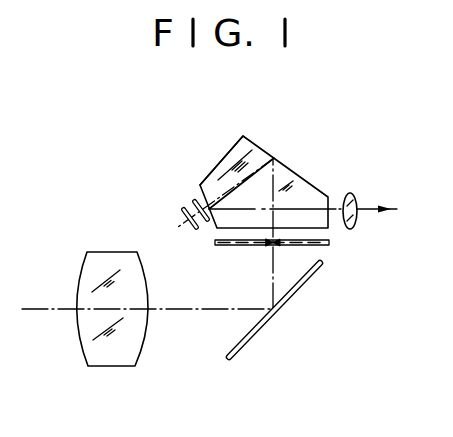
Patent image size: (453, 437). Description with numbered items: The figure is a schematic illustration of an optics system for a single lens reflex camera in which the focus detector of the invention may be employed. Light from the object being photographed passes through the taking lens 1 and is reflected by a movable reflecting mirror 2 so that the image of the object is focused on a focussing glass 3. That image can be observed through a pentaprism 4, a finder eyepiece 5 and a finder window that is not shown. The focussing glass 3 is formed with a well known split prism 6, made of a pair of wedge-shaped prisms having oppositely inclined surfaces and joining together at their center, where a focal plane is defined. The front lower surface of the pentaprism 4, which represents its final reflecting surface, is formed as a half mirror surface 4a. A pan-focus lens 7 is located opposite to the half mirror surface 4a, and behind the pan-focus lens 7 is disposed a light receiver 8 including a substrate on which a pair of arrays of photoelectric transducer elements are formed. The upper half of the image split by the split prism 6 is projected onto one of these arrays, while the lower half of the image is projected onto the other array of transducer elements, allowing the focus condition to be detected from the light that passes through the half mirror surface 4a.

The taking lens 1 is at (138, 279).
The movable reflecting mirror 2 is at (286, 302).
The focussing glass 3 is at (329, 243).
The pentaprism 4 is at (304, 192).
The half mirror surface 4a is at (194, 193).
The finder eyepiece 5 is at (355, 197).
The split prism 6 is at (265, 250).
The pan-focus lens 7 is at (190, 234).
The light receiver 8 is at (182, 219).